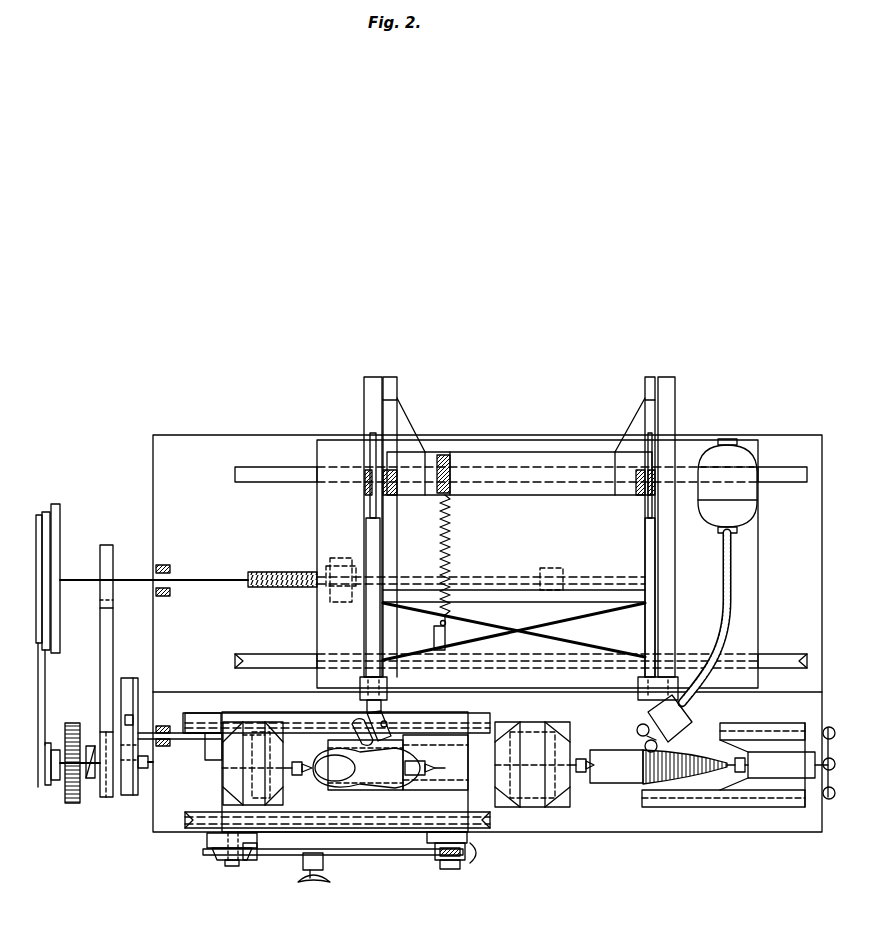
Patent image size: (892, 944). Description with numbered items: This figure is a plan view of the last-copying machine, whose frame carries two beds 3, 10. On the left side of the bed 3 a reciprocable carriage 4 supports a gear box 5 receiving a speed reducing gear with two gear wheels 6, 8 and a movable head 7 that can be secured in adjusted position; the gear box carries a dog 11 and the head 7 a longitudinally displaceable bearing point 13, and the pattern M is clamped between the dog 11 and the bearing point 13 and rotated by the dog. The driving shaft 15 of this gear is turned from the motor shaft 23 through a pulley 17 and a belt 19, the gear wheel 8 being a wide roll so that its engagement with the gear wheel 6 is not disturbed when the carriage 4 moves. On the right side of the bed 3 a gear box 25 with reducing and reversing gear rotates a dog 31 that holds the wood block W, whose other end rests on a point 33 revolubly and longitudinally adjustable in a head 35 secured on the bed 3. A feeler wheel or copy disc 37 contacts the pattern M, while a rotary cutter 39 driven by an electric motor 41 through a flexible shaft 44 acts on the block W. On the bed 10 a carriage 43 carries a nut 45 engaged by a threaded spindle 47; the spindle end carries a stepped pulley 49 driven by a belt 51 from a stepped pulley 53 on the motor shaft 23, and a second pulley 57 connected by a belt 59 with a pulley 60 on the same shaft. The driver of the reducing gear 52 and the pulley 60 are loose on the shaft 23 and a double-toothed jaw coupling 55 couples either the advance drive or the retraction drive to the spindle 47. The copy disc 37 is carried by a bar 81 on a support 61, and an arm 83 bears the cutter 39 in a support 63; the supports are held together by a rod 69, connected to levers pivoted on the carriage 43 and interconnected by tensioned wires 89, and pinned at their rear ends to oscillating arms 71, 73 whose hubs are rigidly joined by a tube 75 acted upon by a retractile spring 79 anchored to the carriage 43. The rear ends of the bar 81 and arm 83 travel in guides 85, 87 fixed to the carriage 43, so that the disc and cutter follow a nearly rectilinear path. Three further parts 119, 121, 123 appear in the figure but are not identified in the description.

The bed 3 is at (487, 634).
The carriage 4 is at (337, 772).
The gear box 5 is at (252, 763).
The gear wheel 6 is at (261, 765).
The movable head 7 is at (420, 740).
The gear wheel 8 is at (241, 726).
The bed 10 is at (521, 564).
The dog 11 is at (297, 771).
The bearing point 13 is at (432, 769).
The driving shaft 15 is at (187, 741).
The pulley 17 is at (130, 678).
The belt 19 is at (132, 723).
The motor shaft 23 is at (150, 765).
The gear box 25 is at (512, 796).
The dog 31 is at (585, 770).
The point 33 is at (733, 768).
The head 35 is at (738, 765).
The copy disc 37 is at (352, 728).
The rotary cutter 39 is at (637, 729).
The electric motor 41 is at (727, 486).
The carriage 43 is at (547, 559).
The flexible shaft 44 is at (731, 598).
The nut 45 is at (342, 560).
The threaded spindle 47 is at (256, 572).
The stepped pulley 49 is at (55, 532).
The belt 51 is at (42, 672).
The reducing gear 52 is at (70, 775).
The stepped pulley 53 is at (47, 745).
The jaw coupling 55 is at (90, 780).
The belt pulley 57 is at (107, 545).
The belt 59 is at (103, 665).
The pulley 60 is at (112, 790).
The support 61 is at (382, 514).
The support 63 is at (666, 532).
The rod 69 is at (592, 600).
The oscillating arm 71 is at (400, 428).
The oscillating arm 73 is at (632, 428).
The tube 75 is at (500, 466).
The retractile spring 79 is at (448, 537).
The bar 81 is at (376, 537).
The arm 83 is at (648, 550).
The guide 85 is at (366, 488).
The guide 87 is at (641, 490).
The tensioned wires 89 is at (532, 640).
The clamp 119 is at (468, 860).
The rod 121 is at (383, 857).
The bracket 123 is at (210, 849).